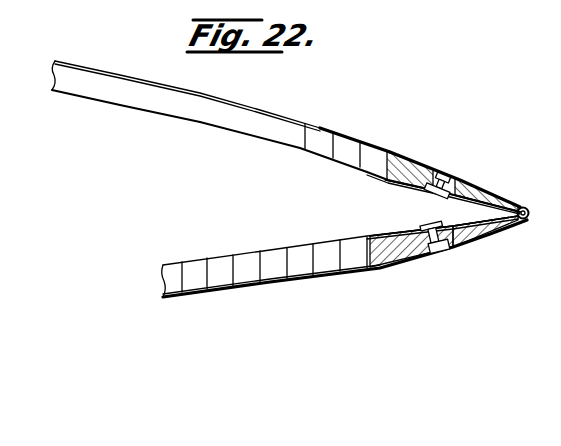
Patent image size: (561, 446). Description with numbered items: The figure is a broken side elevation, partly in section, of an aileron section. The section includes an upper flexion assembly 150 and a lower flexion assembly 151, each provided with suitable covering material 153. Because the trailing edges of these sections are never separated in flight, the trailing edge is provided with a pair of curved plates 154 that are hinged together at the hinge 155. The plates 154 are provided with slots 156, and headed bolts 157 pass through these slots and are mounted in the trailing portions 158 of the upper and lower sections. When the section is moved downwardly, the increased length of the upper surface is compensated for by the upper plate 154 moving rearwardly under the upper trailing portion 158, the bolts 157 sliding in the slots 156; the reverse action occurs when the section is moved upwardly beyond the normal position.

The upper flexion assembly 150 is at (262, 124).
The lower flexion assembly 151 is at (180, 268).
The covering material 153 is at (260, 102).
The curved plates 154 is at (385, 233).
The hinge 155 is at (527, 218).
The slots 156 is at (483, 191).
The headed bolts 157 is at (478, 195).
The trailing portions 158 is at (413, 155).